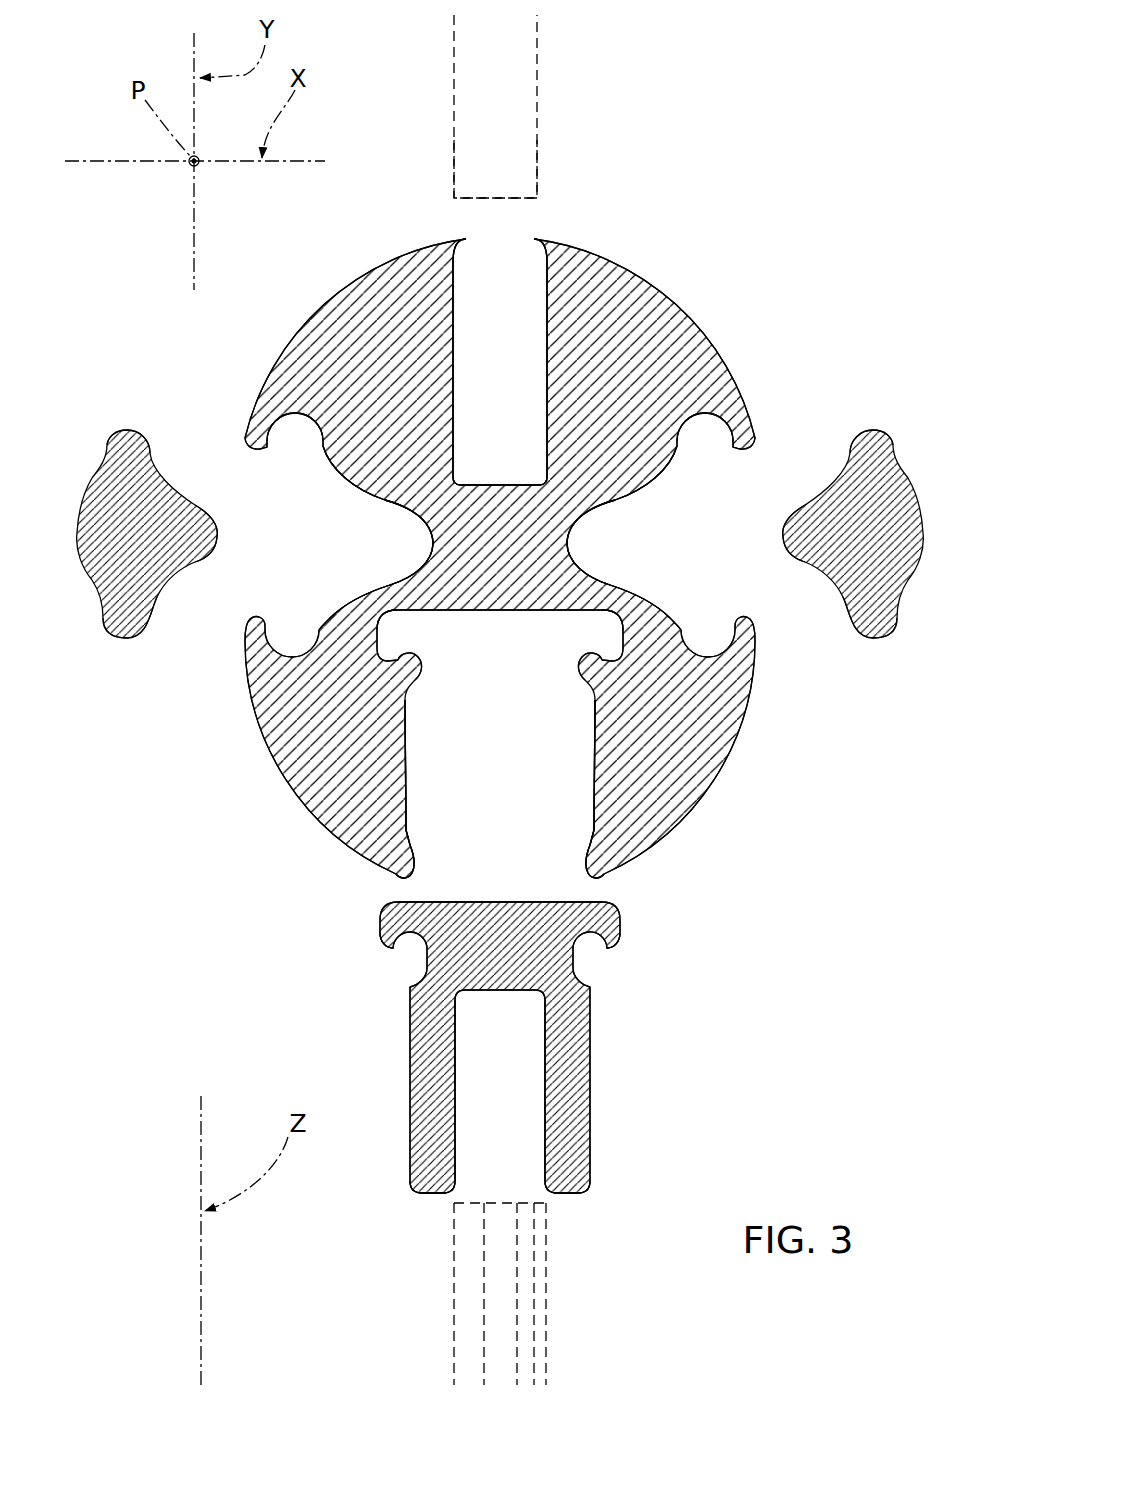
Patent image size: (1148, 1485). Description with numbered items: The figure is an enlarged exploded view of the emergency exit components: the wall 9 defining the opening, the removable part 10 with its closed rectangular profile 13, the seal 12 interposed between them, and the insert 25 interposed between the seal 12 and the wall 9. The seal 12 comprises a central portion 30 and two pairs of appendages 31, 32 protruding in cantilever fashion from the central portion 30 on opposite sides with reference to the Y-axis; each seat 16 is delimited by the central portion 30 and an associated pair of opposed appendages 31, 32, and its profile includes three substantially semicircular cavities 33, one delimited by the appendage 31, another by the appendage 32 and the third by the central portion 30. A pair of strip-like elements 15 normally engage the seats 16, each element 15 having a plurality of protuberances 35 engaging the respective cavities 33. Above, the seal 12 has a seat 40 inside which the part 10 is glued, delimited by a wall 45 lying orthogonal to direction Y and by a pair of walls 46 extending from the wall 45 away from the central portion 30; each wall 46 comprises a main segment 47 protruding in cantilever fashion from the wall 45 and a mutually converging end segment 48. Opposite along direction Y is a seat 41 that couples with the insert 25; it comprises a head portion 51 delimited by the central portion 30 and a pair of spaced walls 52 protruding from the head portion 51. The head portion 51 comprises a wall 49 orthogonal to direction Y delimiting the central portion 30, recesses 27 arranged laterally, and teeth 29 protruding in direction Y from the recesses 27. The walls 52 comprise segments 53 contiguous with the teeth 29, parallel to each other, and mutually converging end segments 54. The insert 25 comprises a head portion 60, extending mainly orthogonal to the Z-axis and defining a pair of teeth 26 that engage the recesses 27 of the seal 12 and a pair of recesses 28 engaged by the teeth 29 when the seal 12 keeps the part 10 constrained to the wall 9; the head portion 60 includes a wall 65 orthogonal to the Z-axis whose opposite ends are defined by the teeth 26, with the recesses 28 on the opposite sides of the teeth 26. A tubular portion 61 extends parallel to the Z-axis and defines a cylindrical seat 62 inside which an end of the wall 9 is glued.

The wall 9 is at (505, 1306).
The removable part 10 is at (503, 128).
The seal 12 is at (742, 300).
The closed profile 13 is at (452, 105).
The strip-like element 15 is at (123, 517).
The seat 16 is at (352, 488).
The insert 25 is at (665, 935).
The tooth 26 is at (384, 942).
The recess 27 is at (386, 653).
The recess 28 is at (430, 930).
The tooth 29 is at (421, 662).
The central portion 30 is at (500, 540).
The appendage 31 is at (385, 315).
The appendage 32 is at (340, 763).
The cavity 33 is at (295, 418).
The protuberance 35 is at (127, 438).
The seat 40 is at (456, 337).
The seat 41 is at (408, 790).
The wall 45 is at (500, 481).
The wall 46 is at (542, 283).
The main segment 47 is at (533, 477).
The end segment 48 is at (460, 247).
The wall 49 is at (583, 606).
The head portion 51 is at (470, 622).
The wall 52 is at (598, 740).
The segment 53 is at (408, 738).
The end segment 54 is at (598, 868).
The head portion 60 is at (483, 935).
The tubular portion 61 is at (437, 1162).
The cylindrical seat 62 is at (460, 1080).
The wall 65 is at (517, 907).